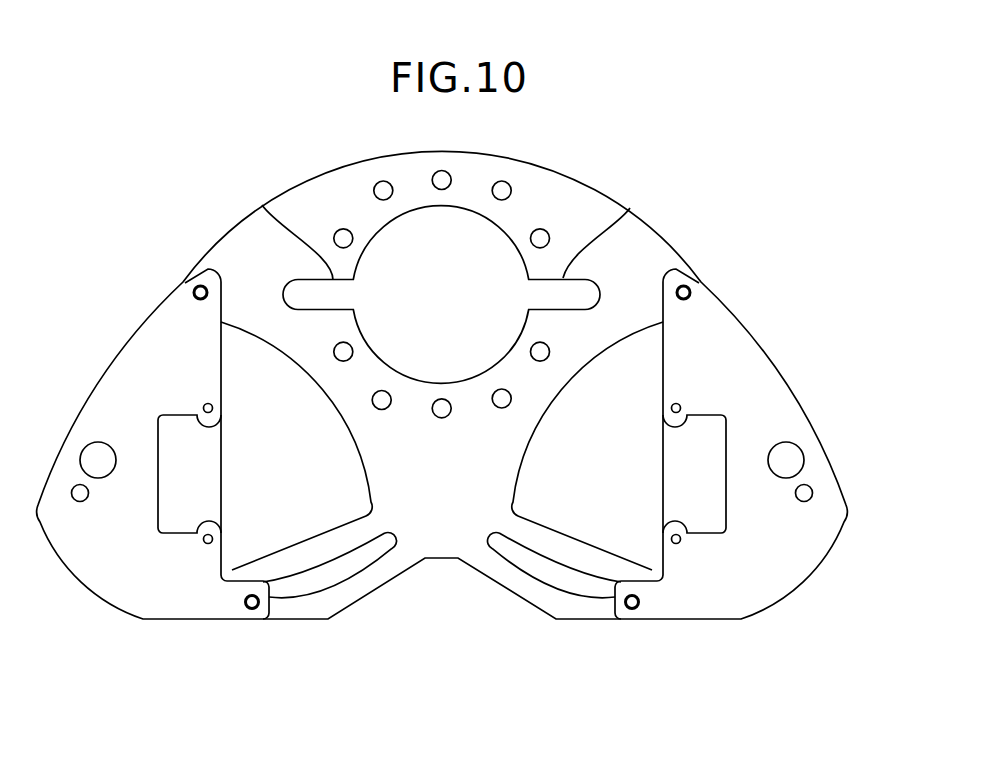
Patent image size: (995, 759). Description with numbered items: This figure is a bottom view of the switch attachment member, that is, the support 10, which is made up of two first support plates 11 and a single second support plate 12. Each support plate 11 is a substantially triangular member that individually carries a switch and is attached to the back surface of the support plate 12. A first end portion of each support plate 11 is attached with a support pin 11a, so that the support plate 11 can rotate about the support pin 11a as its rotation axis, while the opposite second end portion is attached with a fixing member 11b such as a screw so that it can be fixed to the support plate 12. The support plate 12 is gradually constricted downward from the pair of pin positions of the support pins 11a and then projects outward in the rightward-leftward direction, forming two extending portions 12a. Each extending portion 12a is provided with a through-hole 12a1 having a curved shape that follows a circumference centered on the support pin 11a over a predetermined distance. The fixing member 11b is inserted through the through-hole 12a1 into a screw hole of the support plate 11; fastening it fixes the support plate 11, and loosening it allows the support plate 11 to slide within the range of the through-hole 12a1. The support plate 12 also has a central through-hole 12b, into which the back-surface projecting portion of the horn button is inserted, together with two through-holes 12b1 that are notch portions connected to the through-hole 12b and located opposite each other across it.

The support 10 is at (174, 178).
The support plate 11 is at (90, 568).
The support pin 11a is at (193, 286).
The fixing member 11b is at (252, 594).
The support plate 12 is at (440, 560).
The extending portion 12a is at (373, 586).
The through-hole 12a1 is at (328, 562).
The through-hole 12b is at (503, 228).
The through-hole 12b1 is at (262, 205).